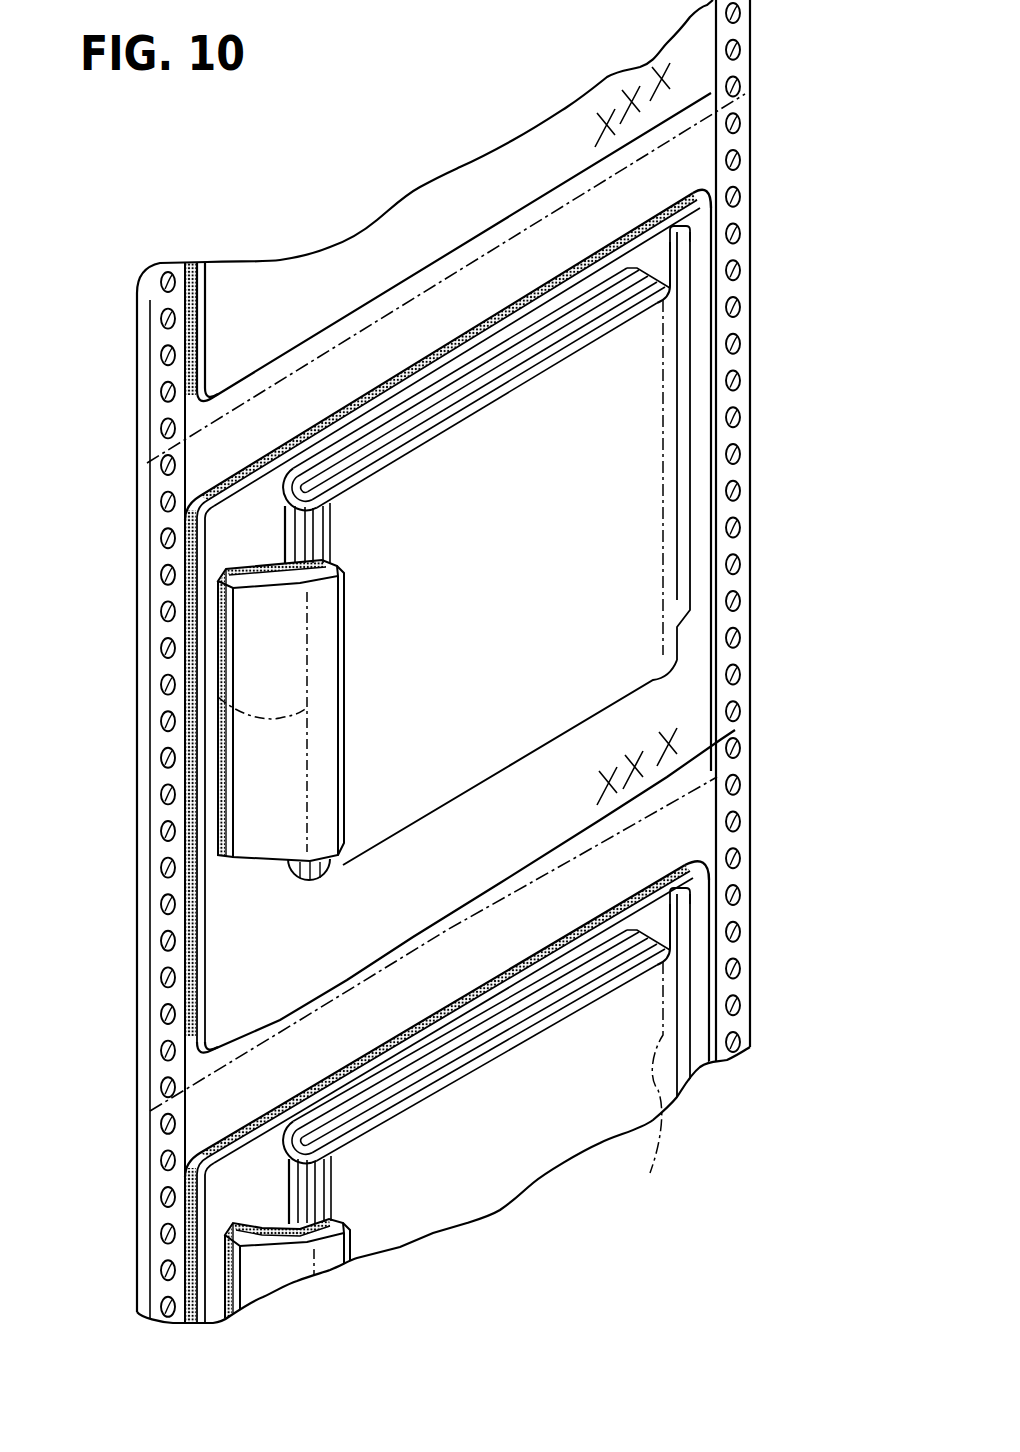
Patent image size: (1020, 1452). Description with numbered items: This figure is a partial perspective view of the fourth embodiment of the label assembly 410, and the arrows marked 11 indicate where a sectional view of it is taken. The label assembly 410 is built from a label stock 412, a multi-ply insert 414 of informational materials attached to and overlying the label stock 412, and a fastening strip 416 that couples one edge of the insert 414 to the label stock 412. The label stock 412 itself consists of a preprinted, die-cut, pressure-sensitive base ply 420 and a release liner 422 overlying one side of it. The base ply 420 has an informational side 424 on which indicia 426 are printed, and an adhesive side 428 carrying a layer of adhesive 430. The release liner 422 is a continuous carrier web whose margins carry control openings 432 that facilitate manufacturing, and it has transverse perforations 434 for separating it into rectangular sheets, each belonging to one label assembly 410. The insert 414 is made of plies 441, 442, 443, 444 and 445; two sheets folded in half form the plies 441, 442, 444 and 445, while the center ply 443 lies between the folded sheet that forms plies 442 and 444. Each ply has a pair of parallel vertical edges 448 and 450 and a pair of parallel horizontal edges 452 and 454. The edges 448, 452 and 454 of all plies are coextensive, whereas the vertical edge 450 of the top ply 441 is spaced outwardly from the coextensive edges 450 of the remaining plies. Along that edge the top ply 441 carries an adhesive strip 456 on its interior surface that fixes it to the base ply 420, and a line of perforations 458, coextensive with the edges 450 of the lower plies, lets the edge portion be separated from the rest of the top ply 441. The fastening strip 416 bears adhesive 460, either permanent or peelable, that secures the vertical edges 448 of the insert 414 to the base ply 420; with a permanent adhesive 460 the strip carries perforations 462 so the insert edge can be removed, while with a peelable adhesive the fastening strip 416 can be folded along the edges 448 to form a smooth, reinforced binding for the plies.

The label assembly 410 is at (776, 350).
The label stock 412 is at (716, 66).
The multi-ply insert 414 is at (326, 889).
The fastening strip 416 is at (339, 739).
The base ply 420 is at (195, 328).
The release liner 422 is at (750, 33).
The informational side 424 is at (262, 352).
The indicia 426 is at (560, 153).
The adhesive side 428 is at (203, 490).
The layer of adhesive 430 is at (225, 478).
The control openings 432 is at (742, 277).
The perforations 434 is at (203, 415).
The top ply 441 is at (478, 343).
The ply 442 is at (513, 353).
The center ply 443 is at (547, 347).
The ply 444 is at (585, 330).
The ply 445 is at (622, 297).
The vertical edge 448 is at (240, 543).
The vertical edge 450 is at (670, 263).
The horizontal edge 452 is at (415, 368).
The horizontal edge 454 is at (387, 843).
The adhesive strip 456 is at (712, 215).
The perforations 458 is at (667, 603).
The adhesive 460 is at (220, 857).
The perforations 462 is at (218, 697).
The section line 11- 11 is at (112, 770).